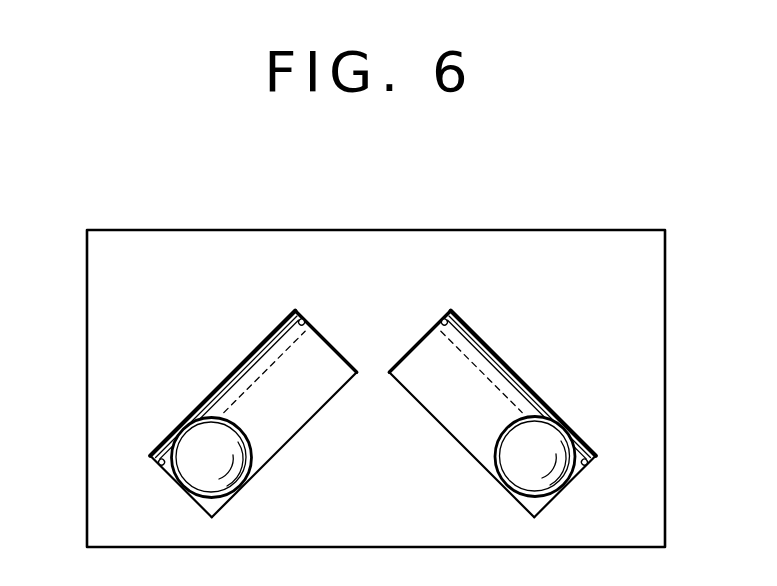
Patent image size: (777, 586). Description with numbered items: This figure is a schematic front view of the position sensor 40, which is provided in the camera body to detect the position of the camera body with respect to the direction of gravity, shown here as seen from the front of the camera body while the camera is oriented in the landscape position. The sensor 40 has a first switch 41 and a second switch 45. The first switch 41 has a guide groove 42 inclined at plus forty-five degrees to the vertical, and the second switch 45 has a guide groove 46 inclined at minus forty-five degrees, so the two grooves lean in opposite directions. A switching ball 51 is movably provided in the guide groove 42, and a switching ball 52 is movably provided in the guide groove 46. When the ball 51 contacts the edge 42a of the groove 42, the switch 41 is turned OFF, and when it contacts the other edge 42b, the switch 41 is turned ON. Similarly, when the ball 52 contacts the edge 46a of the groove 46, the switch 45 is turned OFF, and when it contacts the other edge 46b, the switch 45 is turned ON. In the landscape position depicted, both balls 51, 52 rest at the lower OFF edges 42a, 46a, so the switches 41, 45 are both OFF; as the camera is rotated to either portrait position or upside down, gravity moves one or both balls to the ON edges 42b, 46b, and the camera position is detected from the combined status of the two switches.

The position sensor 40 is at (595, 222).
The first switch 41 is at (194, 396).
The guide groove 42 is at (262, 370).
The edge 42a is at (160, 466).
The edge 42b is at (302, 322).
The second switch 45 is at (552, 396).
The guide groove 46 is at (483, 370).
The edge 46a is at (590, 464).
The edge 46b is at (443, 322).
The switching ball 51 is at (246, 478).
The switching ball 52 is at (522, 472).